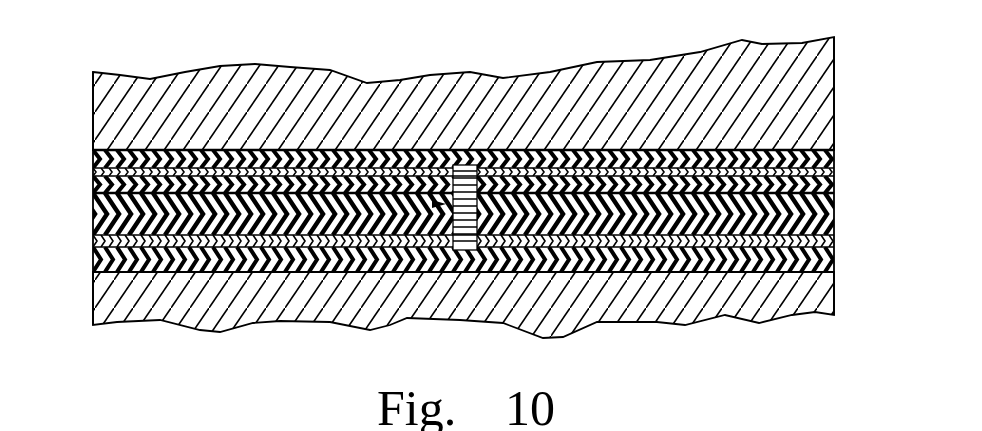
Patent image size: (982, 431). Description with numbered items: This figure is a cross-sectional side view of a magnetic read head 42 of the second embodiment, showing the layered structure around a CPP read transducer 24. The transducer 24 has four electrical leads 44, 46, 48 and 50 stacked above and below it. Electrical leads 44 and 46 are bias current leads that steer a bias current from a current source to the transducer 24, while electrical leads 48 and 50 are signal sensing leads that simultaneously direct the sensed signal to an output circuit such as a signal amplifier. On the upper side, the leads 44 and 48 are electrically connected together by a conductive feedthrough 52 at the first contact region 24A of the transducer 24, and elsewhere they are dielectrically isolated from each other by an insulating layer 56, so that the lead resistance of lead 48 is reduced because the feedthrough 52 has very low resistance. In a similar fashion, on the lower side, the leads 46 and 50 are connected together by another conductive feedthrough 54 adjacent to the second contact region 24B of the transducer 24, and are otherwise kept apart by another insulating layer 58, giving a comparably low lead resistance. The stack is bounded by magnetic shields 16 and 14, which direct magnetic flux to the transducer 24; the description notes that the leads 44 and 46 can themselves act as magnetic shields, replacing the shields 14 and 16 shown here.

The magnetic read head 42 is at (79, 36).
The magnetic shield 16 is at (765, 60).
The magnetic shield 14 is at (786, 300).
The electrical lead 44 is at (93, 166).
The insulating layer 56 is at (93, 179).
The electrical lead 48 is at (93, 192).
The electrical lead 50 is at (770, 213).
The insulating layer 58 is at (805, 237).
The electrical lead 46 is at (805, 242).
The CPP read transducer 24 is at (372, 165).
The first contact region 24A is at (520, 198).
The second contact region 24B is at (535, 240).
The conductive feedthrough 54 is at (403, 268).
The conductive feedthrough 52 is at (522, 180).